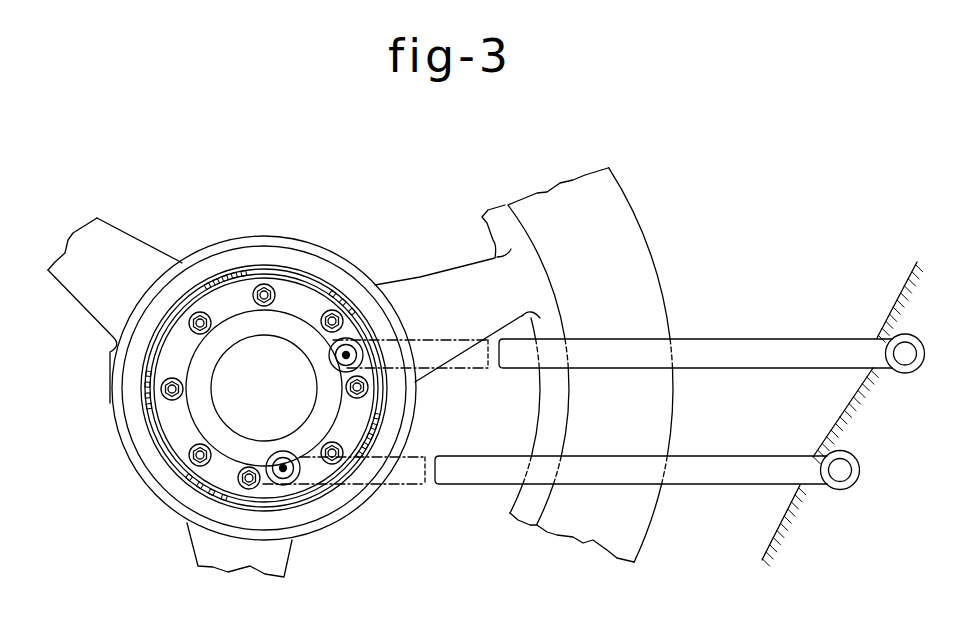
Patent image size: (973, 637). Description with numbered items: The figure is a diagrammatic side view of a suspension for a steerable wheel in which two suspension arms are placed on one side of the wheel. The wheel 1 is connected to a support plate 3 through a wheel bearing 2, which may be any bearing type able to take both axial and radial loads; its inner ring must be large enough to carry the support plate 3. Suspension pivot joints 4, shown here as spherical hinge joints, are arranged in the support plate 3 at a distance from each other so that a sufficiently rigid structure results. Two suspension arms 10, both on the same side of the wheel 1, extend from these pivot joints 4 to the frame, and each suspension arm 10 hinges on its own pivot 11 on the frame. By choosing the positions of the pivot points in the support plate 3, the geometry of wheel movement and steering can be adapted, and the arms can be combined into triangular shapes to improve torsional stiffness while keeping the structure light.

The wheel 1 is at (633, 250).
The wheel bearing 2 is at (345, 303).
The support plate 3 is at (193, 410).
The suspension pivot joints 4 is at (347, 352).
The suspension arms 10 is at (753, 343).
The pivot 11 is at (907, 353).